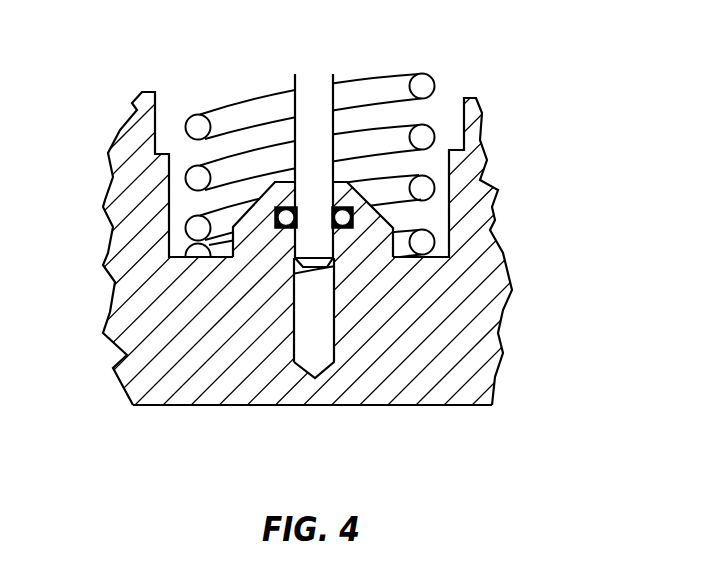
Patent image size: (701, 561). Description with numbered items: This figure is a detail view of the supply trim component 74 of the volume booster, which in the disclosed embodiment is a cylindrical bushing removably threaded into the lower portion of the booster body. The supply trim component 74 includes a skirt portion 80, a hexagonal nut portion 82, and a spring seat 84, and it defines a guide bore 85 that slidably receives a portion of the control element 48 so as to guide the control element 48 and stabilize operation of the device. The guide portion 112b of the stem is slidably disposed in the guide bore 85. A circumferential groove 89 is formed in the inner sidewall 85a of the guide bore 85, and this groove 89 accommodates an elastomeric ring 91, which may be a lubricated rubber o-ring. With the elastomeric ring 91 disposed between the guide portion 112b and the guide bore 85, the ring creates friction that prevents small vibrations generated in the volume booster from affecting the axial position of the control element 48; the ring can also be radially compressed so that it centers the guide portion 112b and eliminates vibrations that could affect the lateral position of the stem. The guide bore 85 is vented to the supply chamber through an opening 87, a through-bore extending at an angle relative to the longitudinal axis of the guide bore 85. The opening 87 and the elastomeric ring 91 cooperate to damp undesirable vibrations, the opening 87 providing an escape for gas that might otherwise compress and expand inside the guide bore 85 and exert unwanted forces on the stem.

The control element 48 is at (311, 146).
The guide portion 112b is at (320, 190).
The skirt portion 80 is at (146, 98).
The hexagonal nut portion 82 is at (218, 390).
The spring seat 84 is at (442, 254).
The guide bore 85 is at (332, 334).
The inner sidewall 85a is at (296, 304).
The opening 87 is at (363, 256).
The circumferential groove 89 is at (277, 216).
The elastomeric ring 91 is at (352, 214).
The supply trim component 74 is at (542, 296).